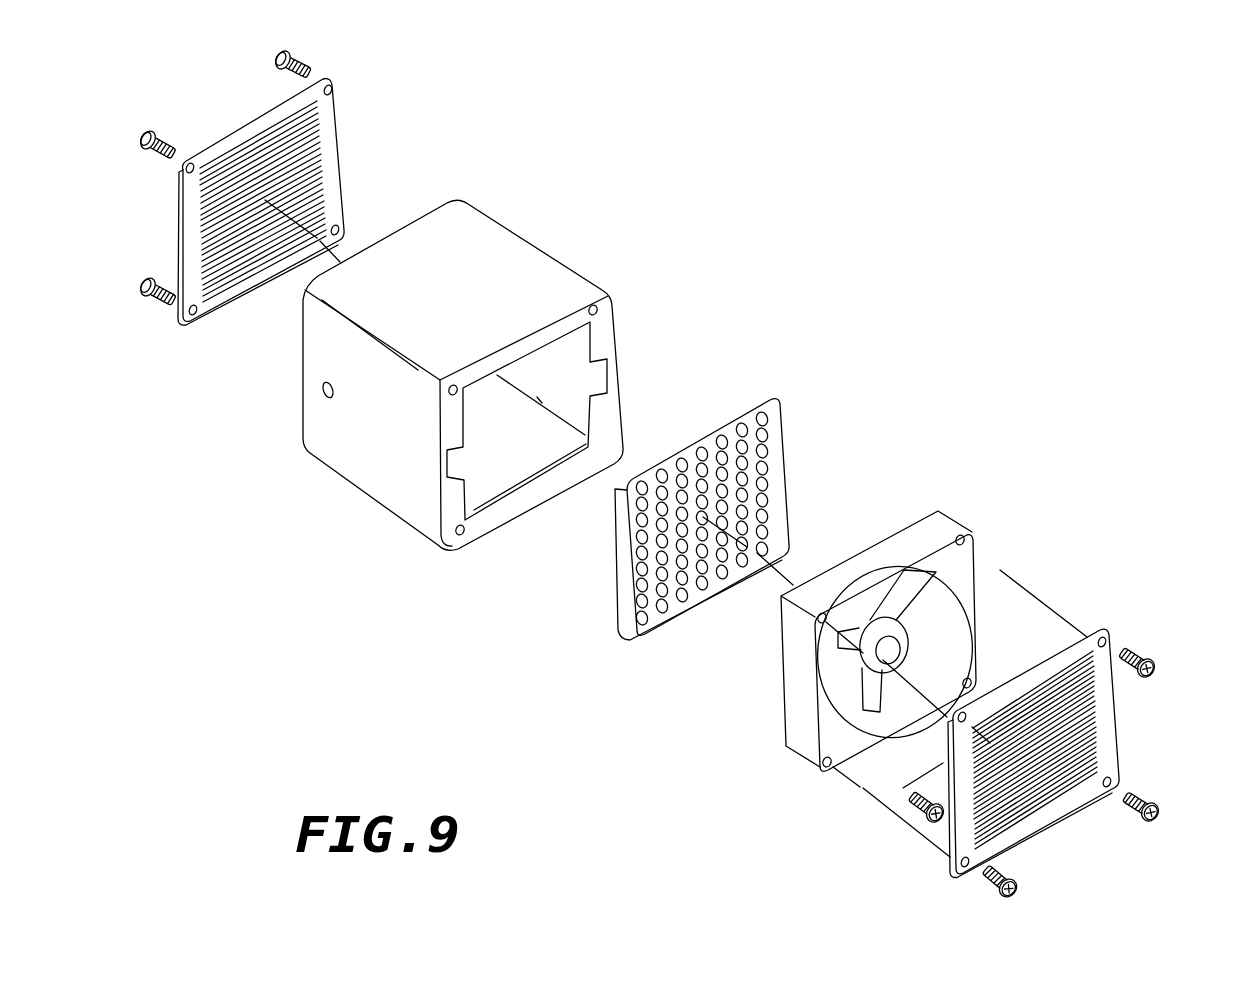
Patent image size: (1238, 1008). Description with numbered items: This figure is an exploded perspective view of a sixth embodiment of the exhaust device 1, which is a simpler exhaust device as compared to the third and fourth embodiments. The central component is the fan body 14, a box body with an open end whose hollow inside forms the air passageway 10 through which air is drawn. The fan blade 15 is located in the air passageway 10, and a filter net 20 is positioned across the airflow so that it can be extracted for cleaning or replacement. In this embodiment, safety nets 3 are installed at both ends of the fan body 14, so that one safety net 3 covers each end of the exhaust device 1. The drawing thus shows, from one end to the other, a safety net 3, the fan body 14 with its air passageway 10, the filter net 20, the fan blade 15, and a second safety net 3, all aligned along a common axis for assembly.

The exhaust device 1 is at (790, 317).
The safety net 3 is at (343, 150).
The air passageway 10 is at (490, 447).
The fan body 14 is at (517, 247).
The fan blade 15 is at (937, 525).
The filter net 20 is at (777, 450).